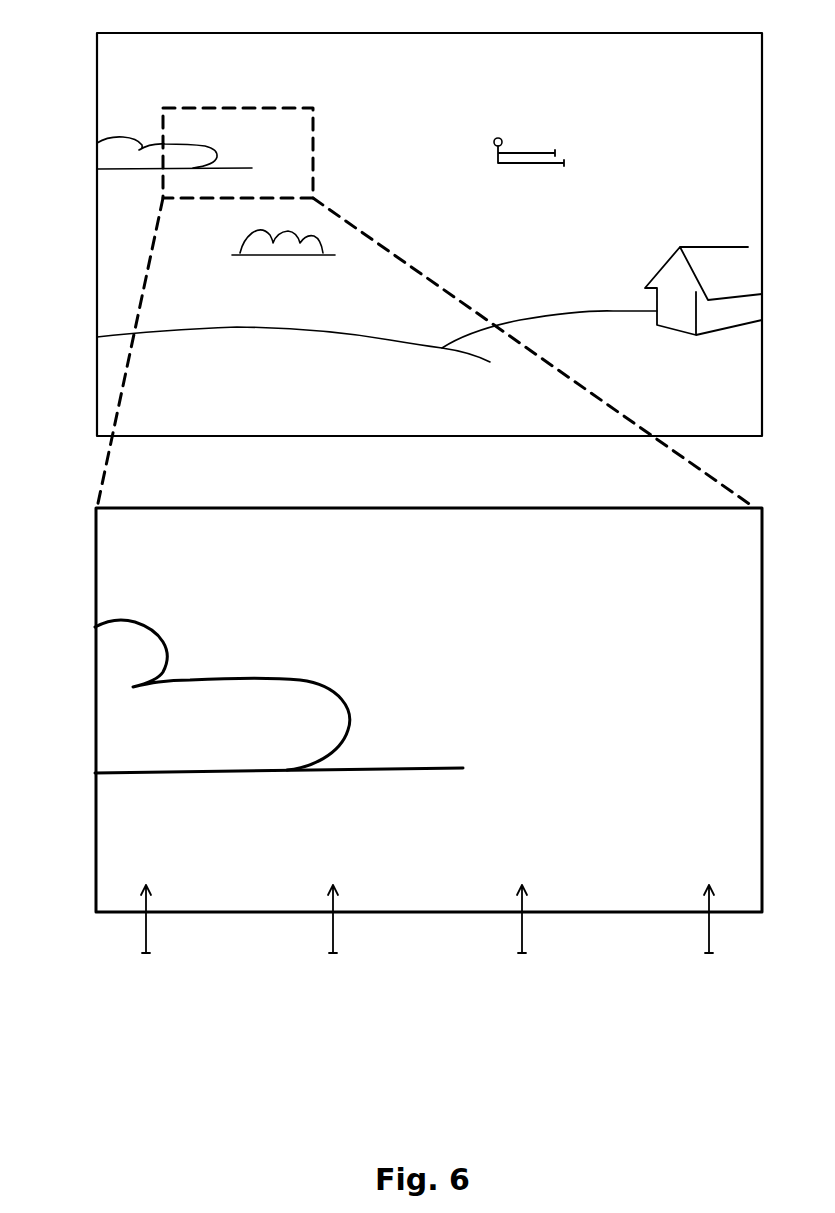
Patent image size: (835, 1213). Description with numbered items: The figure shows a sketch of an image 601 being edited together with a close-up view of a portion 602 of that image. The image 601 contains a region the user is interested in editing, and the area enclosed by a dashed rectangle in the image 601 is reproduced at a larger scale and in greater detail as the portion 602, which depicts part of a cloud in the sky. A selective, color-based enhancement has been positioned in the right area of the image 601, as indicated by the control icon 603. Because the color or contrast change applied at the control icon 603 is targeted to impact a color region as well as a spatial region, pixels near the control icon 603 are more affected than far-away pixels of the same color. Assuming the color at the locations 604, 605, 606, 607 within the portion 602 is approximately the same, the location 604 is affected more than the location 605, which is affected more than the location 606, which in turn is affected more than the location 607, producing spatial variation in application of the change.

The image 601 is at (393, 269).
The portion of image 602 is at (393, 708).
The control icon 603 is at (529, 166).
The location 604 is at (709, 937).
The location 605 is at (522, 937).
The location 606 is at (333, 937).
The location 607 is at (146, 937).